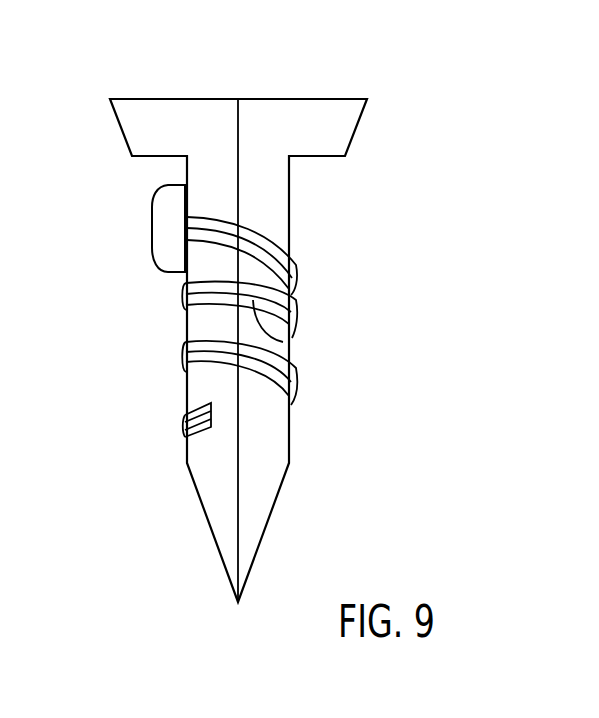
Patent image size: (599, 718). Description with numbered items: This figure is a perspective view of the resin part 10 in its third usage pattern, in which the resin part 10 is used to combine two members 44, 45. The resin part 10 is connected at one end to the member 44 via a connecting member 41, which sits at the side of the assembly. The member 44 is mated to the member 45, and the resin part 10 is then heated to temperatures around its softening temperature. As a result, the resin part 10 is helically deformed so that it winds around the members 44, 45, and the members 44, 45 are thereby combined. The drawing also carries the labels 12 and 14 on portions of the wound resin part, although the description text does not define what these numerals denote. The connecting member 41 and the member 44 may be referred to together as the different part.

The resin part 10 is at (298, 252).
The thread 12 is at (290, 347).
The thread end portion 14 is at (282, 298).
The connecting member 41 is at (165, 227).
The member 44 is at (171, 120).
The member 45 is at (307, 120).